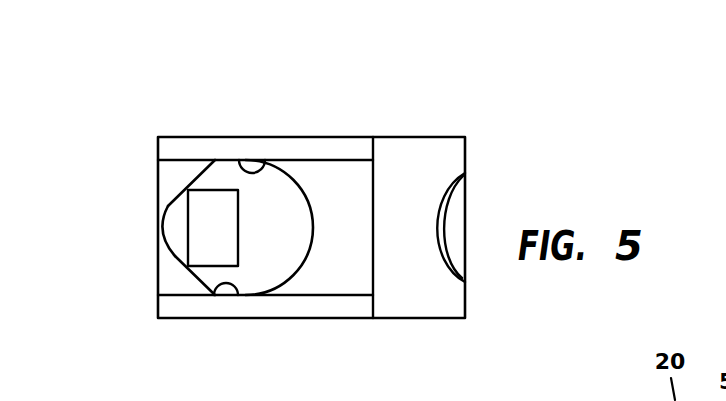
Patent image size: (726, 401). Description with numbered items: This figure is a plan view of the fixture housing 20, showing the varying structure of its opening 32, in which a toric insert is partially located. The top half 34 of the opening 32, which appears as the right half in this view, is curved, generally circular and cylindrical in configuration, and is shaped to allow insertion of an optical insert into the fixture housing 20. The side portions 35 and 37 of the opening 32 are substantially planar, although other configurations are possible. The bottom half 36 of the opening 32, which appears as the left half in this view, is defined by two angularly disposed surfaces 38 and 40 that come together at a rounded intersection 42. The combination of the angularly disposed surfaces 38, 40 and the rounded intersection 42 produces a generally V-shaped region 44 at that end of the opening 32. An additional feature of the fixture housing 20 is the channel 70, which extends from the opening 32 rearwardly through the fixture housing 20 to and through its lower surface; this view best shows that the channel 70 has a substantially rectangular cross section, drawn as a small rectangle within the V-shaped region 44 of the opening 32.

The fixture housing 20 is at (435, 111).
The opening 32 is at (318, 231).
The top half of opening 34 is at (312, 204).
The side portion of opening 35 is at (266, 168).
The bottom half of opening 36 is at (174, 203).
The side portion of opening 37 is at (217, 290).
The angularly disposed surface 38 is at (176, 147).
The angularly disposed surface 40 is at (177, 258).
The rounded intersection 42 is at (108, 264).
The V-shaped region 44 is at (164, 254).
The channel 70 is at (214, 203).